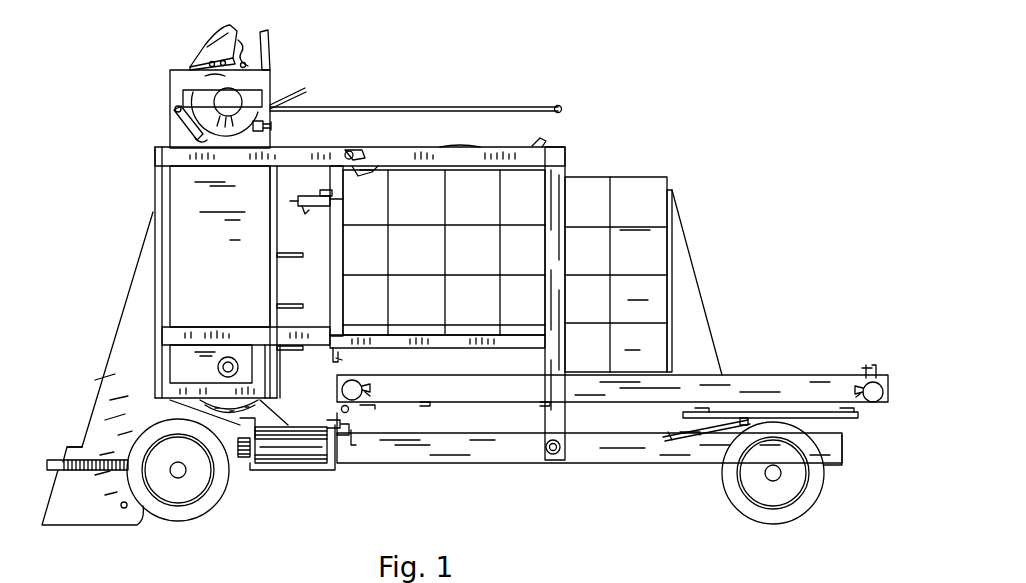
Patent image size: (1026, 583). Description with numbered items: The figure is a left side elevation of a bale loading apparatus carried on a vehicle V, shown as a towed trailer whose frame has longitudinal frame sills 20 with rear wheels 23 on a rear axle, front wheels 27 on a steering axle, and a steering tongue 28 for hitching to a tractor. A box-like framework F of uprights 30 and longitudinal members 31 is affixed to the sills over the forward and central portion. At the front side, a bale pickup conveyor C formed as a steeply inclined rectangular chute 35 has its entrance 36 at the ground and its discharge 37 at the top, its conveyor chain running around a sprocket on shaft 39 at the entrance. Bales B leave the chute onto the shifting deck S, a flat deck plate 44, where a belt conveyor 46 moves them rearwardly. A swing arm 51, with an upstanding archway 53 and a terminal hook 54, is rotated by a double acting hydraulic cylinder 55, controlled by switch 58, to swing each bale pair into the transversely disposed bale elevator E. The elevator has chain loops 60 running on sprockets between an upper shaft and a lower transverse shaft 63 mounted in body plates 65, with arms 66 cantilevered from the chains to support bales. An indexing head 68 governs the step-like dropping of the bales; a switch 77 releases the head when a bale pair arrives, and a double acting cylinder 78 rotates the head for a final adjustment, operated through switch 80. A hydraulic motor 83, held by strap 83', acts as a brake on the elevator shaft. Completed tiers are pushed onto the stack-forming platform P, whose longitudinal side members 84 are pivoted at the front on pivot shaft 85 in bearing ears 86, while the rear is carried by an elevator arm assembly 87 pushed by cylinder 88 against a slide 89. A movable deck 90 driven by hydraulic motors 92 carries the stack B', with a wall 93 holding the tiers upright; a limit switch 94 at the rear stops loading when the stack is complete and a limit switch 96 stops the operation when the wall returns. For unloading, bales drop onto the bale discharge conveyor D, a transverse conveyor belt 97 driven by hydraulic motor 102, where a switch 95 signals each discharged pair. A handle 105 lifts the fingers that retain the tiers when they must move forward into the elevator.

The longitudinal frame sills 20 is at (522, 458).
The rear wheels 23 is at (818, 482).
The front wheels 27 is at (205, 505).
The steering tongue 28 is at (75, 471).
The uprights 30 is at (160, 181).
The longitudinal members 31 is at (466, 168).
The rectangular chute 35 is at (108, 370).
The entrance 36 is at (65, 456).
The discharge 37 is at (237, 40).
The shaft 39 is at (120, 506).
The deck plate 44 is at (367, 150).
The belt conveyor 46 is at (472, 146).
The swing arm 51 is at (393, 107).
The upstanding archway 53 is at (268, 38).
The hook 54 is at (562, 107).
The double acting hydraulic cylinder 55 is at (316, 196).
The switch 58 is at (543, 140).
The chain loops 60 is at (247, 49).
The lower transverse shaft 63 is at (218, 367).
The structural body plates 65 is at (277, 246).
The arms 66 is at (284, 300).
The indexing head 68 is at (195, 84).
The switch 77 is at (272, 126).
The double acting cylinder 78 is at (175, 124).
The switch 80 is at (284, 345).
The hydraulic motor 83 is at (194, 107).
The strap 83' is at (244, 89).
The longitudinal side members 84 is at (495, 400).
The pivot shaft 85 is at (349, 412).
The structural bearing ears 86 is at (352, 440).
The elevator arm assembly 87 is at (745, 418).
The cylinder 88 is at (683, 430).
The slide 89 is at (733, 412).
The movable deck 90 is at (814, 378).
The hydraulic motors 92 is at (371, 389).
The wall 93 is at (673, 252).
The limit switch 94 is at (873, 365).
The switch 95 is at (328, 420).
The limit switch 96 is at (343, 362).
The conveyor belt 97 is at (300, 466).
The hydraulic motor 102 is at (243, 460).
The handle 105 is at (350, 162).
The bales B is at (444, 252).
The stack B' is at (620, 260).
The bale pickup conveyor C is at (121, 297).
The bale discharge conveyor D is at (318, 469).
The bale elevator E is at (203, 210).
The framework F is at (577, 164).
The stack-forming platform P is at (777, 349).
The shifting deck S is at (485, 94).
The vehicle V is at (631, 476).